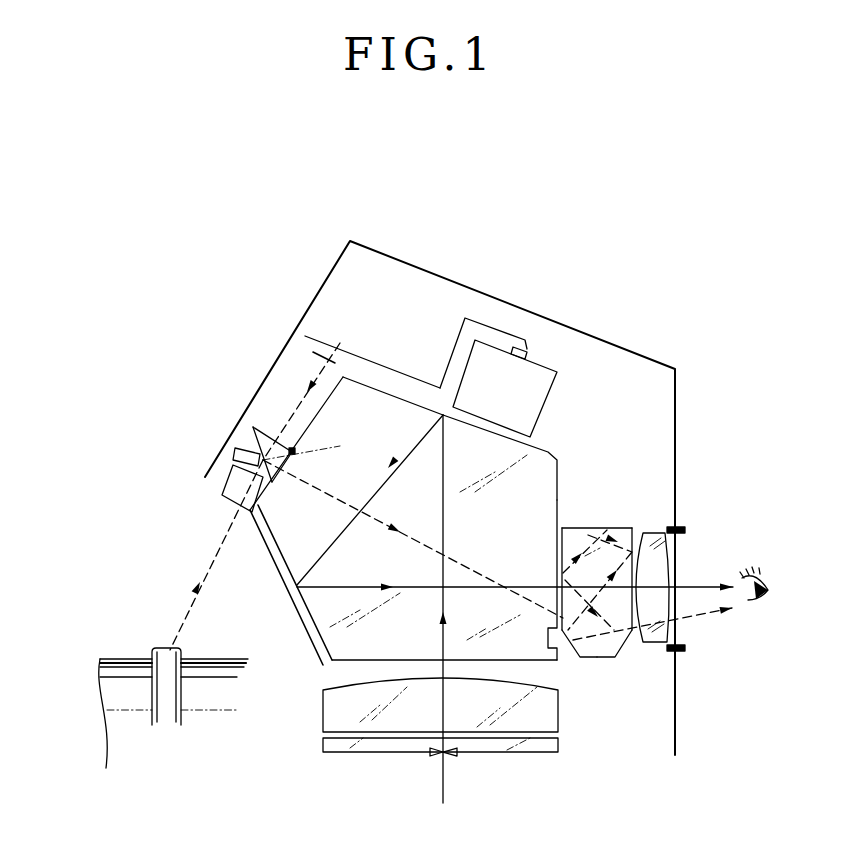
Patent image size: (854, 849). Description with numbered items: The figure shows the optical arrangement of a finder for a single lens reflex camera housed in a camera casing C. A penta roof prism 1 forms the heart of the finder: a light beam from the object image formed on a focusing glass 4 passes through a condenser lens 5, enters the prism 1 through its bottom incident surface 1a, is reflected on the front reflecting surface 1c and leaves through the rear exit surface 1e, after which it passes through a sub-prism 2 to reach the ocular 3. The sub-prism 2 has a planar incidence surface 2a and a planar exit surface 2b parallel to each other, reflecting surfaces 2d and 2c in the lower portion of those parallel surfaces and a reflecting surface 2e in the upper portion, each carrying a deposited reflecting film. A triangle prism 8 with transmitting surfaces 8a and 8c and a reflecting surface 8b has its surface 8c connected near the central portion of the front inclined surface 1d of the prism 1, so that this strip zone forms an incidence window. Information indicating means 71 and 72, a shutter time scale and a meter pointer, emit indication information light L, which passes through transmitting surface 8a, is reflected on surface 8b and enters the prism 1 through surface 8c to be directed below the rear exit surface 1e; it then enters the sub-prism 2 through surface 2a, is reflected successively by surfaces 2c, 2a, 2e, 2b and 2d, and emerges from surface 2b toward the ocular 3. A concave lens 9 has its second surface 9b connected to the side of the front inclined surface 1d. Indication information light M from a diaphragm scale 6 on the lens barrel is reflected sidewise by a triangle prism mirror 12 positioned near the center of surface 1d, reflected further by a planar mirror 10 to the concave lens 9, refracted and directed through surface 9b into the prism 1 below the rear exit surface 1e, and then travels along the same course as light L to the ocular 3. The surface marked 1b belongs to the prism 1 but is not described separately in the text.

The penta roof prism 1 is at (425, 521).
The bottom incident surface 1a is at (335, 667).
The prism exit face 1b is at (549, 452).
The front reflecting surface 1c is at (288, 568).
The front inclined surface 1d is at (330, 400).
The rear exit surface 1e is at (558, 477).
The sub-prism 2 is at (613, 579).
The planar incidence surface 2a is at (572, 535).
The planar exit surface 2b is at (635, 540).
The reflecting surface 2c is at (618, 652).
The reflecting surface 2d is at (568, 653).
The reflecting surface 2e is at (607, 528).
The ocular 3 is at (657, 542).
The focusing glass 4 is at (515, 752).
The condenser lens 5 is at (546, 713).
The diaphragm scale 6 is at (162, 648).
The triangle prism 8 is at (263, 435).
The transmitting surface 8a is at (265, 438).
The reflecting surface 8b is at (252, 433).
The transmitting surface 8c is at (292, 465).
The concave lens 9 is at (294, 447).
The second surface 9b is at (323, 450).
The planar mirror 10 is at (233, 455).
The triangle prism mirror 12 is at (225, 487).
The shutter time scale 71 is at (328, 350).
The meter pointer 72 is at (358, 356).
The camera casing C is at (590, 335).
The indication information light L is at (306, 390).
The indication information light M is at (190, 600).